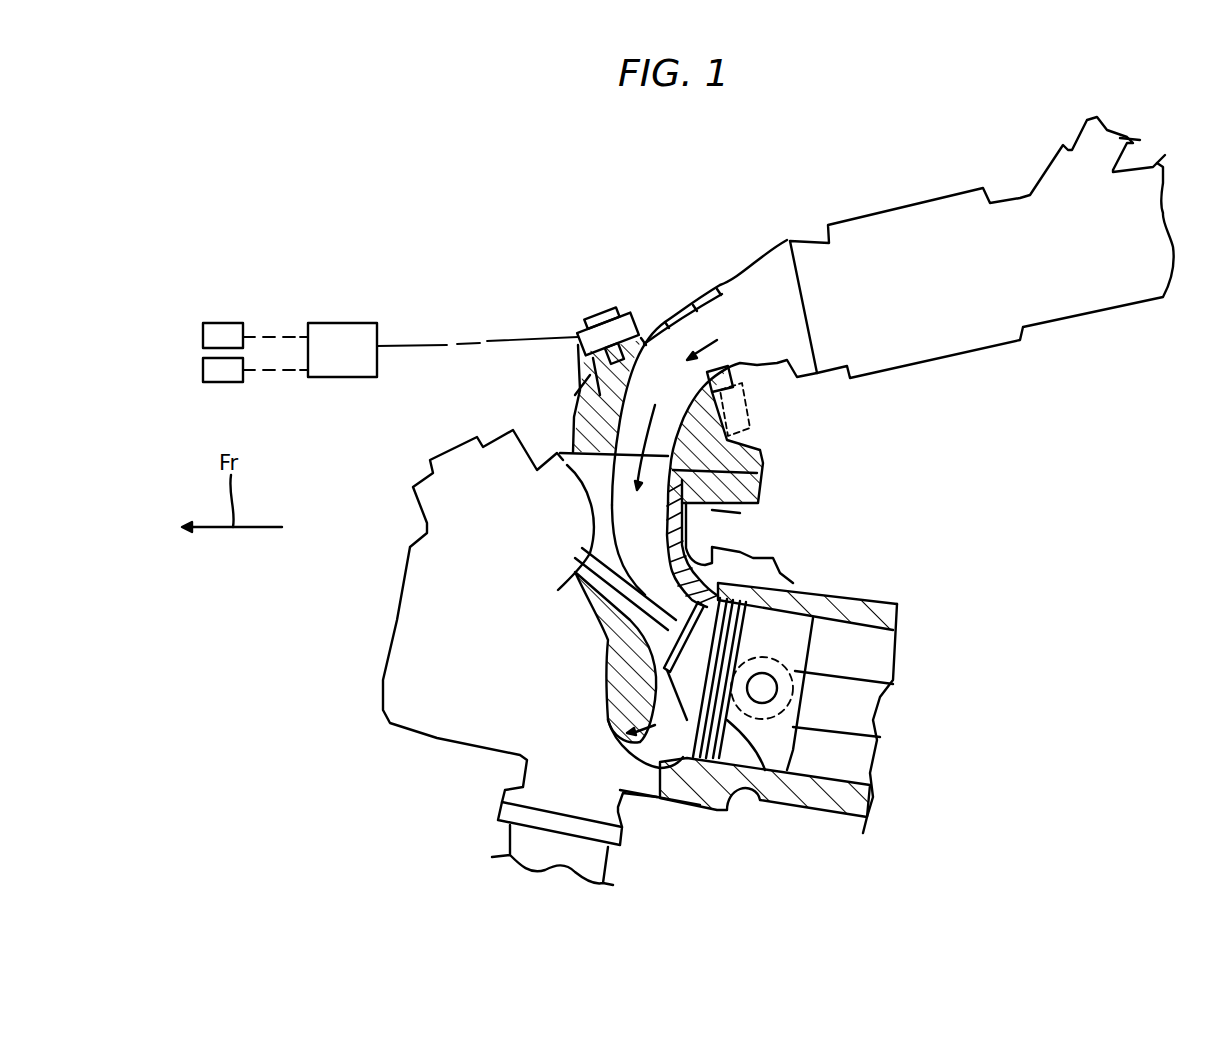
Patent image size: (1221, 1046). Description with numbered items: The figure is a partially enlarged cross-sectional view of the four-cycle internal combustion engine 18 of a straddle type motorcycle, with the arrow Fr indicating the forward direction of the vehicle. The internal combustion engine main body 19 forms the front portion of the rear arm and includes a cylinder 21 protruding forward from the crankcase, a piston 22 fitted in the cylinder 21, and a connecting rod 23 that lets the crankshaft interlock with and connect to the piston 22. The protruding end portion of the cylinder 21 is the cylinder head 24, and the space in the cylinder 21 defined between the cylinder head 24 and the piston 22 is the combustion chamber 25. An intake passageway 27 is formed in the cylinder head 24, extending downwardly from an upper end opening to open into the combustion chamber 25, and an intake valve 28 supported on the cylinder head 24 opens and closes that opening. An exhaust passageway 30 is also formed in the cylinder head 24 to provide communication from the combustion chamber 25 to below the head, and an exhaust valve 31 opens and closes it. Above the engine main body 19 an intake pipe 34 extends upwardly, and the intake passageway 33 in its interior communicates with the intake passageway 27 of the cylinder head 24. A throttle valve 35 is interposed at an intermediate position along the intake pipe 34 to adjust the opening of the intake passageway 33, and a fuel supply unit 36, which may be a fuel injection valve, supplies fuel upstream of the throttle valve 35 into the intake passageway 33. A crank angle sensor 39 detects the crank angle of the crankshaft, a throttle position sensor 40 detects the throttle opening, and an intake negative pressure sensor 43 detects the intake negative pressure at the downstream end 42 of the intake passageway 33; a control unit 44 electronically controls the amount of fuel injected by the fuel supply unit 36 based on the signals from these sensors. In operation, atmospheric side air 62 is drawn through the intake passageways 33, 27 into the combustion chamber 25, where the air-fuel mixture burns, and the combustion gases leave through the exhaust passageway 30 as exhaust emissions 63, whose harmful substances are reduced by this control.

The internal combustion engine 18 is at (1110, 463).
The internal combustion engine main body 19 is at (383, 633).
The cylinder 21 is at (870, 593).
The piston 22 is at (790, 623).
The connecting rod 23 is at (873, 715).
The cylinder head 24 is at (712, 520).
The combustion chamber 25 is at (770, 775).
The intake passageway 27 is at (593, 527).
The intake valve 28 is at (613, 627).
The exhaust passageway 30 is at (630, 690).
The exhaust valve 31 is at (607, 698).
The intake passageway 33 is at (673, 335).
The intake pipe 34 is at (697, 287).
The throttle valve 35 is at (960, 353).
The fuel supply unit 36 is at (1130, 150).
The crank angle sensor 39 is at (203, 336).
The throttle position sensor 40 is at (203, 370).
The downstream end 42 is at (577, 420).
The intake negative pressure sensor 43 is at (590, 305).
The control unit 44 is at (338, 335).
The atmospheric side air 62 is at (743, 327).
The exhaust emissions 63 is at (660, 742).